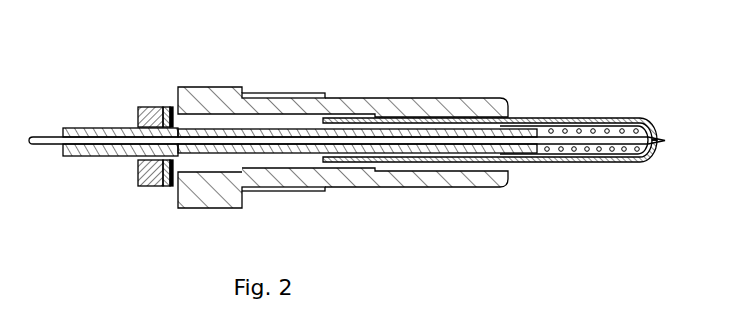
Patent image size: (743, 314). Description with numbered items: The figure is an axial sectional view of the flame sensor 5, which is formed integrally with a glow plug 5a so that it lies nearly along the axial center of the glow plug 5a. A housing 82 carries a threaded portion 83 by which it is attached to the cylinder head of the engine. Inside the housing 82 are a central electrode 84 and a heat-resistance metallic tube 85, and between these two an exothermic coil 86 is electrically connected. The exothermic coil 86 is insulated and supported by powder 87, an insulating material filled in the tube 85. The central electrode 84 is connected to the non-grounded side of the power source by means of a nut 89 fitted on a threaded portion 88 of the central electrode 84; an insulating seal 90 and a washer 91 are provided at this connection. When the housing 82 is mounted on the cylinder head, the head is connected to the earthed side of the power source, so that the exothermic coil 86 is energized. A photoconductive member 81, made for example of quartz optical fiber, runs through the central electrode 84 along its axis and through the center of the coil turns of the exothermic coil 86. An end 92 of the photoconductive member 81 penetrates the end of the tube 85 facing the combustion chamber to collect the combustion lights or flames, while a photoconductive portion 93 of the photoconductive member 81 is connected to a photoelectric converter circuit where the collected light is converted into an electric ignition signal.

The flame sensor 5 is at (455, 82).
The glow plug 5a is at (602, 104).
The photoconductive member 81 is at (307, 131).
The housing 82 is at (382, 102).
The threaded portion 83 is at (271, 95).
The central electrode 84 is at (317, 158).
The heat-resistance metallic tube 85 is at (556, 118).
The exothermic coil 86 is at (588, 152).
The powder 87 is at (630, 122).
The threaded portion 88 is at (107, 128).
The nut 89 is at (152, 107).
The insulating seal 90 is at (165, 107).
The washer 91 is at (173, 186).
The end 92 is at (663, 143).
The photoconductive portion 93 is at (50, 148).